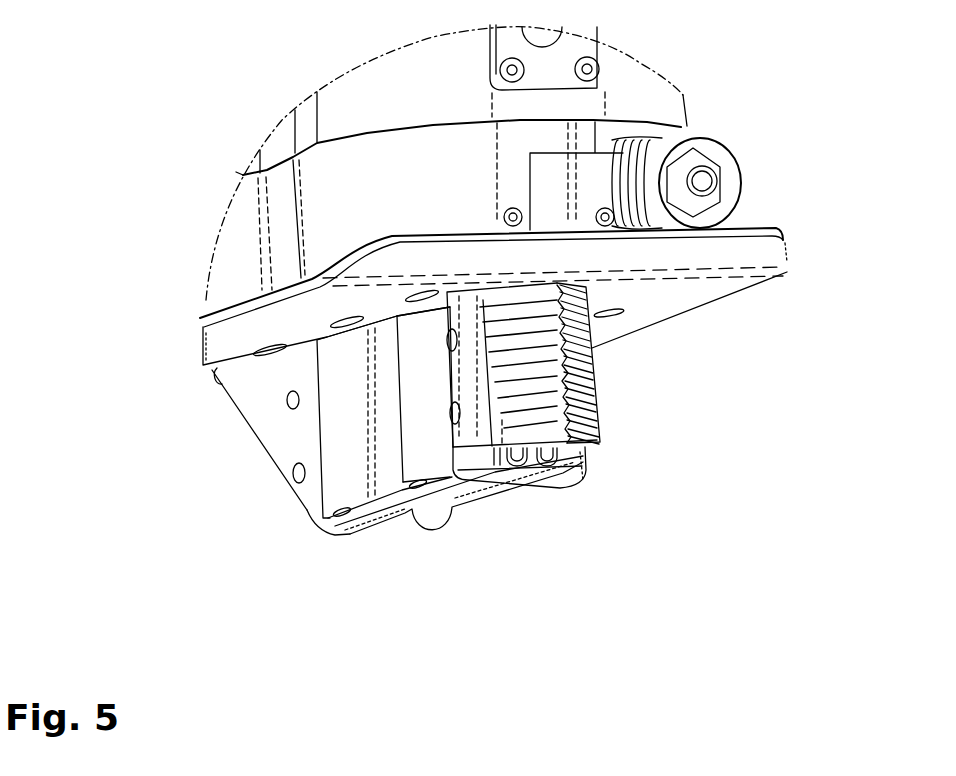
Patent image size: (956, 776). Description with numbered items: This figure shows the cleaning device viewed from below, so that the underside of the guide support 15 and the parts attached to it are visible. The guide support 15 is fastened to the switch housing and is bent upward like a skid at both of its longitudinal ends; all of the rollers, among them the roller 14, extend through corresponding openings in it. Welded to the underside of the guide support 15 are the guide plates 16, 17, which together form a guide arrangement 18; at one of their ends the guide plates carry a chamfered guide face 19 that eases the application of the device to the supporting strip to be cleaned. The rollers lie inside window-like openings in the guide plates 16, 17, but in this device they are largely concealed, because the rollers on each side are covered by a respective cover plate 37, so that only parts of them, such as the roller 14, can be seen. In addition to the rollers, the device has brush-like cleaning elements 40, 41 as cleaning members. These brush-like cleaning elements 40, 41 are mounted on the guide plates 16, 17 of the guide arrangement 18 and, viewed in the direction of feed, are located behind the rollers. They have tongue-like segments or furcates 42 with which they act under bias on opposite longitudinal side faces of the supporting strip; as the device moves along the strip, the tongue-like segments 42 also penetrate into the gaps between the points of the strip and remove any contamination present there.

The roller 14 is at (523, 470).
The guide support 15 is at (773, 251).
The guide plate 16 is at (372, 520).
The guide plate 17 is at (580, 470).
The guide arrangement 18 is at (318, 538).
The chamfered guide face 19 is at (267, 455).
The cover plate 37 is at (333, 481).
The brush-like cleaning element 40 is at (604, 408).
The brush-like cleaning element 41 is at (491, 452).
The tongue-like segments 42 is at (568, 370).